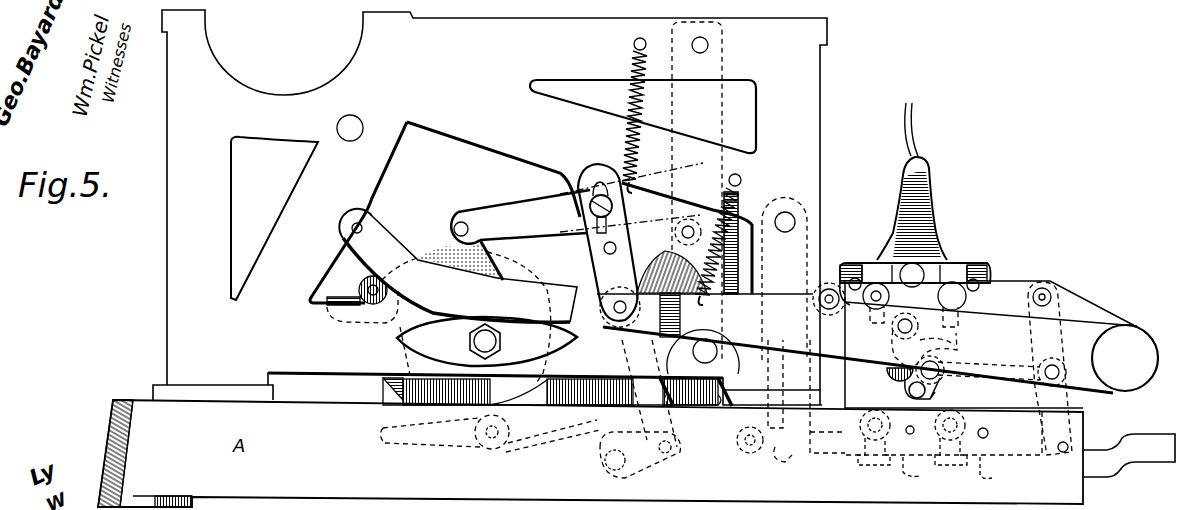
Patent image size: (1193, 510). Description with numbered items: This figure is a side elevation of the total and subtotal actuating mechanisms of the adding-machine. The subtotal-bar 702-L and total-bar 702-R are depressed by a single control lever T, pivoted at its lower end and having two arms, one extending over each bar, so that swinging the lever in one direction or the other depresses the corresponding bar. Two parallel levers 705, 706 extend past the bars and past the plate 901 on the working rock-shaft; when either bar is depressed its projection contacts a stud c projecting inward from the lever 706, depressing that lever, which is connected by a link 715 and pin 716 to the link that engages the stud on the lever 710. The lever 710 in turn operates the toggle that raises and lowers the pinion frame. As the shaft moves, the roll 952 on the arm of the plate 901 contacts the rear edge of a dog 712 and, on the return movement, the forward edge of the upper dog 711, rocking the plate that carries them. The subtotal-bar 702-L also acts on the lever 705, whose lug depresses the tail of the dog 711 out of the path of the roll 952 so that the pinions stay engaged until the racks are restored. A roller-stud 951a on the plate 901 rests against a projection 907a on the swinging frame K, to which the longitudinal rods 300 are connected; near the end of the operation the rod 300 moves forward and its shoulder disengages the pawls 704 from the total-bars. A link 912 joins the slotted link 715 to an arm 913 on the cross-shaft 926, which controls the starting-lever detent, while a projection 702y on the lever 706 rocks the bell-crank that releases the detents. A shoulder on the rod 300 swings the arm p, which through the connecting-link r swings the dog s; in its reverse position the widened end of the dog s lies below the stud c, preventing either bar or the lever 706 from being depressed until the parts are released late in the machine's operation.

The longitudinal rod 300 is at (1165, 452).
The pawl 704 is at (915, 472).
The lever 705 is at (452, 265).
The lever 706 is at (627, 330).
The lever 710 is at (643, 191).
The dog 711 is at (362, 322).
The dog 712 is at (440, 420).
The link 715 is at (590, 256).
The pin 716 is at (567, 194).
The plate 901 is at (636, 262).
The link 912 is at (647, 388).
The arm 913 is at (652, 462).
The cross-shaft 926 is at (600, 460).
The roller-stud 951a is at (749, 453).
The roll 952 is at (493, 450).
The projection 907a is at (778, 458).
The projection 702y is at (826, 306).
The subtotal-bar 702-L is at (875, 267).
The total-bar 702-R is at (962, 267).
The swinging frame K is at (807, 210).
The control lever T is at (914, 181).
The stud c is at (900, 328).
The arm p is at (1037, 344).
The dog s is at (902, 388).
The connecting-link r is at (965, 380).